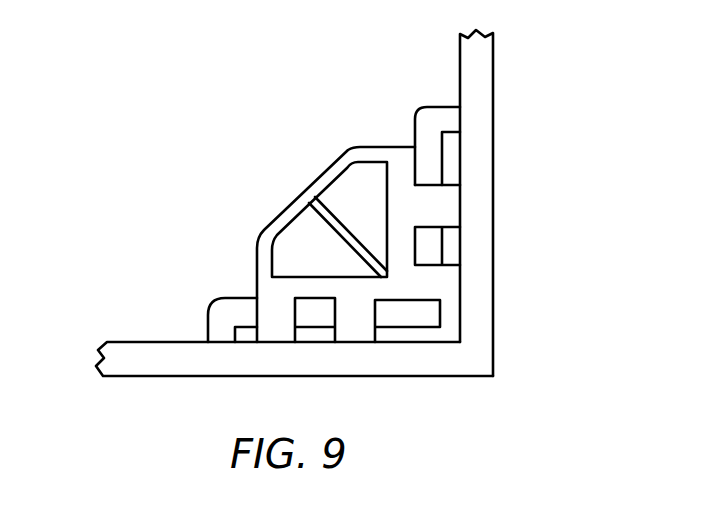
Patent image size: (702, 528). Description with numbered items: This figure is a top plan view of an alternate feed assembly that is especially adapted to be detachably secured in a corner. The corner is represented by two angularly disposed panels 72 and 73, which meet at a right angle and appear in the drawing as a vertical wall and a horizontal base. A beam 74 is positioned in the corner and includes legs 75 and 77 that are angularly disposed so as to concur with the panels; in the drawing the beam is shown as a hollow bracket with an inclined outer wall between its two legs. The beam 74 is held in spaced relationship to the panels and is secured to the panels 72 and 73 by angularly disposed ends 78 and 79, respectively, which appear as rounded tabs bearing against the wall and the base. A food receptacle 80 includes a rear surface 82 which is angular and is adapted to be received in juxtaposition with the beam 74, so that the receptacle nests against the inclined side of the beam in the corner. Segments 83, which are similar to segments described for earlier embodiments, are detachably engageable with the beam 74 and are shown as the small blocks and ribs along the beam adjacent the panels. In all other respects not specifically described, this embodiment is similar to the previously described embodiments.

The panel 72 is at (501, 205).
The panel 73 is at (110, 342).
The beam 74 is at (407, 313).
The leg 75 is at (414, 140).
The leg 77 is at (237, 295).
The end 78 is at (445, 106).
The end 79 is at (208, 325).
The food receptacle 80 is at (275, 217).
The rear surface 82 is at (415, 167).
The segment 83 is at (447, 285).